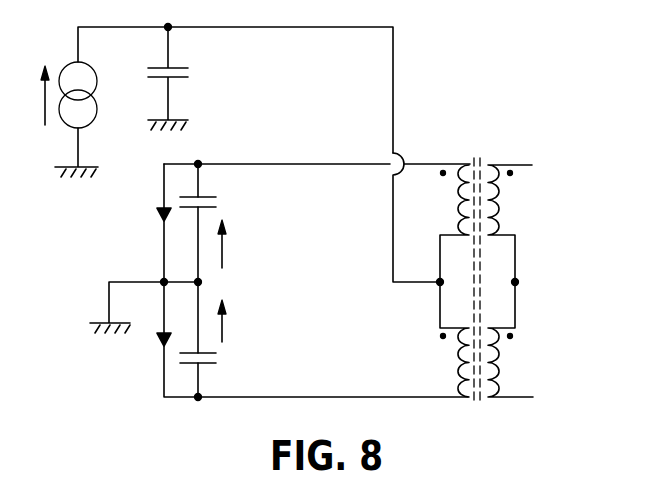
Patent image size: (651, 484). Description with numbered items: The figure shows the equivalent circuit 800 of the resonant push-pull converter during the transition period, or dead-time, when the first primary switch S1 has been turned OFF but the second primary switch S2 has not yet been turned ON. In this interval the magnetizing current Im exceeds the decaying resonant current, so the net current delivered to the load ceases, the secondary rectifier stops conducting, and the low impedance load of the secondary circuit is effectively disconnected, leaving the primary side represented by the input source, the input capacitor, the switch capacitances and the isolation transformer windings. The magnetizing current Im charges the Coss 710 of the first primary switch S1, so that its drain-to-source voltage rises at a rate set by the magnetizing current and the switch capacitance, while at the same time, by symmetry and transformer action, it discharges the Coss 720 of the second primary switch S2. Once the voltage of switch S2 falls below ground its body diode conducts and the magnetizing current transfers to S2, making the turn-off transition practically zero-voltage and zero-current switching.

The equivalent circuit 800 is at (512, 53).
The Coss of S2 720 is at (312, 200).
The Coss of the first primary switch S1 710 is at (313, 368).